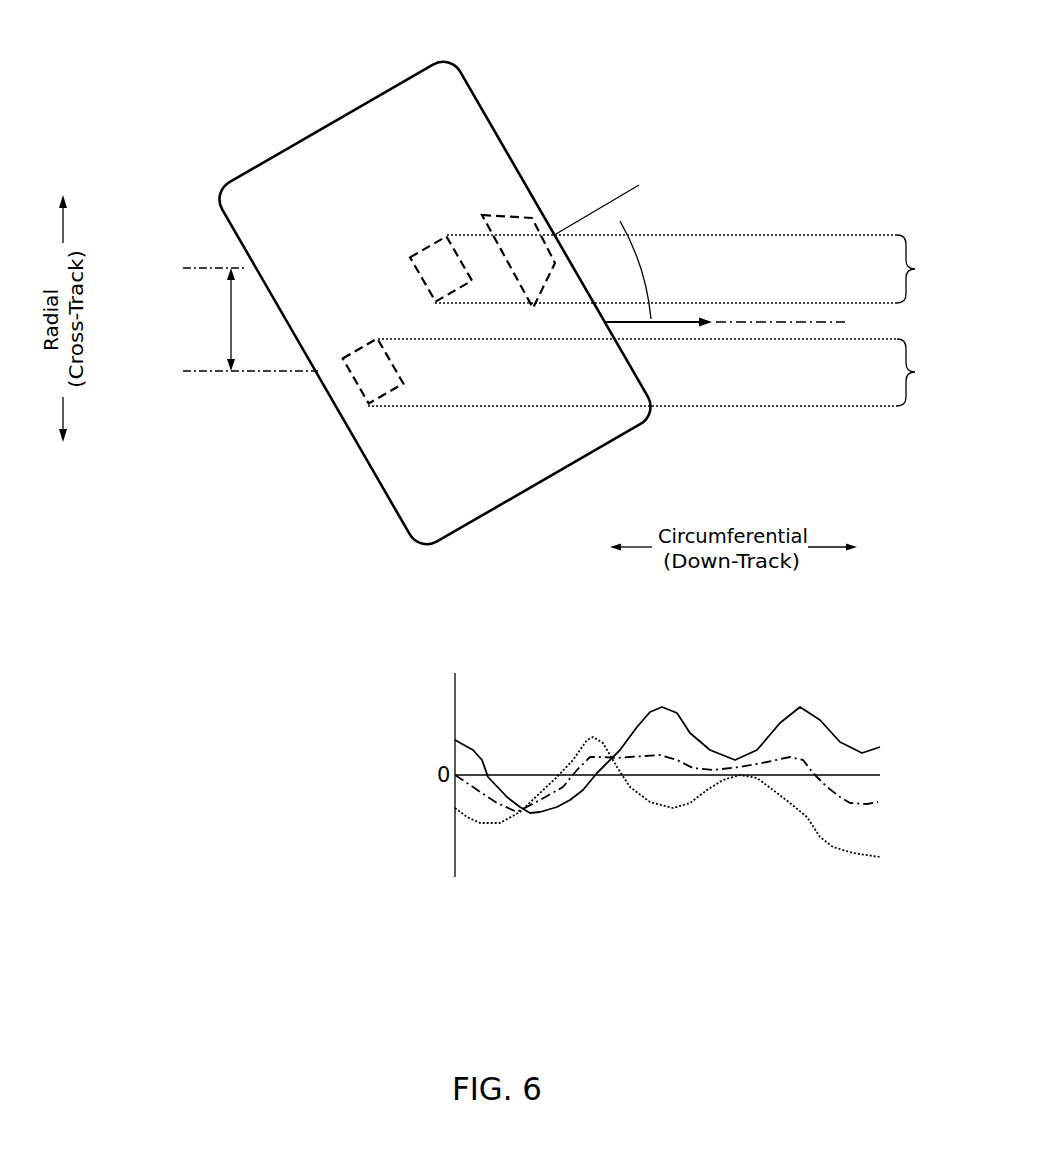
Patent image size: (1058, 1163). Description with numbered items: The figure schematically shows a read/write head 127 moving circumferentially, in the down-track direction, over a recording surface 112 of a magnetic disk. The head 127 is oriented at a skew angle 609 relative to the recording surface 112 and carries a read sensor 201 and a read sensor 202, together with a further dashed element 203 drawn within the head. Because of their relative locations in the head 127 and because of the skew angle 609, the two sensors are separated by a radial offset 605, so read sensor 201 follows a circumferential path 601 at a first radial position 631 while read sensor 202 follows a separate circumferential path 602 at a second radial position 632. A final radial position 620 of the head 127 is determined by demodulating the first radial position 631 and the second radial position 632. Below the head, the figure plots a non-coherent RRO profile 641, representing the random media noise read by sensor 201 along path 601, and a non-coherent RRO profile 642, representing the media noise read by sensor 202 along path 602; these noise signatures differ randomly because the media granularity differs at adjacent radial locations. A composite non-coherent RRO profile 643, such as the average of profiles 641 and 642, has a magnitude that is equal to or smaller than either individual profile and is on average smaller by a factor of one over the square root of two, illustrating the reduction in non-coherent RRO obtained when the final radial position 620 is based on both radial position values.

The read/write head 127 is at (322, 61).
The recording surface 112 is at (196, 125).
The read sensor 201 is at (352, 382).
The read sensor 202 is at (426, 245).
The write transducer 203 is at (503, 215).
The circumferential path 601 is at (916, 372).
The circumferential path 602 is at (916, 269).
The radial offset 605 is at (229, 325).
The skew angle 609 is at (622, 222).
The final radial position 620 is at (867, 322).
The first radial position 631 is at (201, 369).
The second radial position 632 is at (201, 266).
The non-coherent RRO profile 641 is at (473, 753).
The non-coherent RRO profile 642 is at (480, 823).
The composite non-coherent RRO profile 643 is at (853, 800).